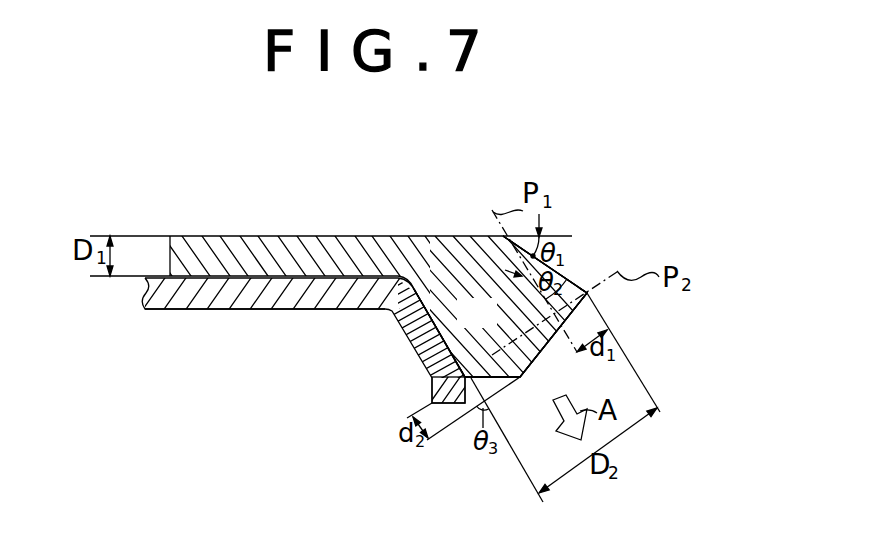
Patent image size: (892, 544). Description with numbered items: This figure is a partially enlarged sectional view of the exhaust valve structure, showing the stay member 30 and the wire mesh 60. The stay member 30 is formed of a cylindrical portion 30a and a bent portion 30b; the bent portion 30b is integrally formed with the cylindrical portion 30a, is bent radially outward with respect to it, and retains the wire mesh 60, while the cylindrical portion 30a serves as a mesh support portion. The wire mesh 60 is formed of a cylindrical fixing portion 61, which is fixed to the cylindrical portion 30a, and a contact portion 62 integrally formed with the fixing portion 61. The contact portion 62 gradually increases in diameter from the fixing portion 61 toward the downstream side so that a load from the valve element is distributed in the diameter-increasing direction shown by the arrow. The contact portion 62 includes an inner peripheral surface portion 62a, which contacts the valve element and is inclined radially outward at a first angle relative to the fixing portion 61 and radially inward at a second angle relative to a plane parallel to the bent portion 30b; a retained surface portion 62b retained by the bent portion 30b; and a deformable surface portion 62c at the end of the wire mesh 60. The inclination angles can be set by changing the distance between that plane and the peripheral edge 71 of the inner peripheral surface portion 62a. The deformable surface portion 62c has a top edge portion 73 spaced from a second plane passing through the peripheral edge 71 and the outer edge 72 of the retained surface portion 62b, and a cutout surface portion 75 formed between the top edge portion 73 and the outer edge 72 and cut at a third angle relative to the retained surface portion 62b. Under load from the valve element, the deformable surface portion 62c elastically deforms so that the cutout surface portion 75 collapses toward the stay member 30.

The stay member 30 is at (288, 316).
The cylindrical portion 30a is at (229, 311).
The bent portion 30b is at (414, 367).
The wire mesh 60 is at (327, 231).
The fixing portion 61 is at (240, 250).
The contact portion 62 is at (524, 371).
The inner peripheral surface portion 62a is at (553, 236).
The retained surface portion 62b is at (401, 334).
The deformable surface portion 62c is at (553, 338).
The peripheral edge 71 is at (589, 296).
The outer edge 72 is at (500, 306).
The top edge portion 73 is at (506, 379).
The cutout surface portion 75 is at (512, 440).